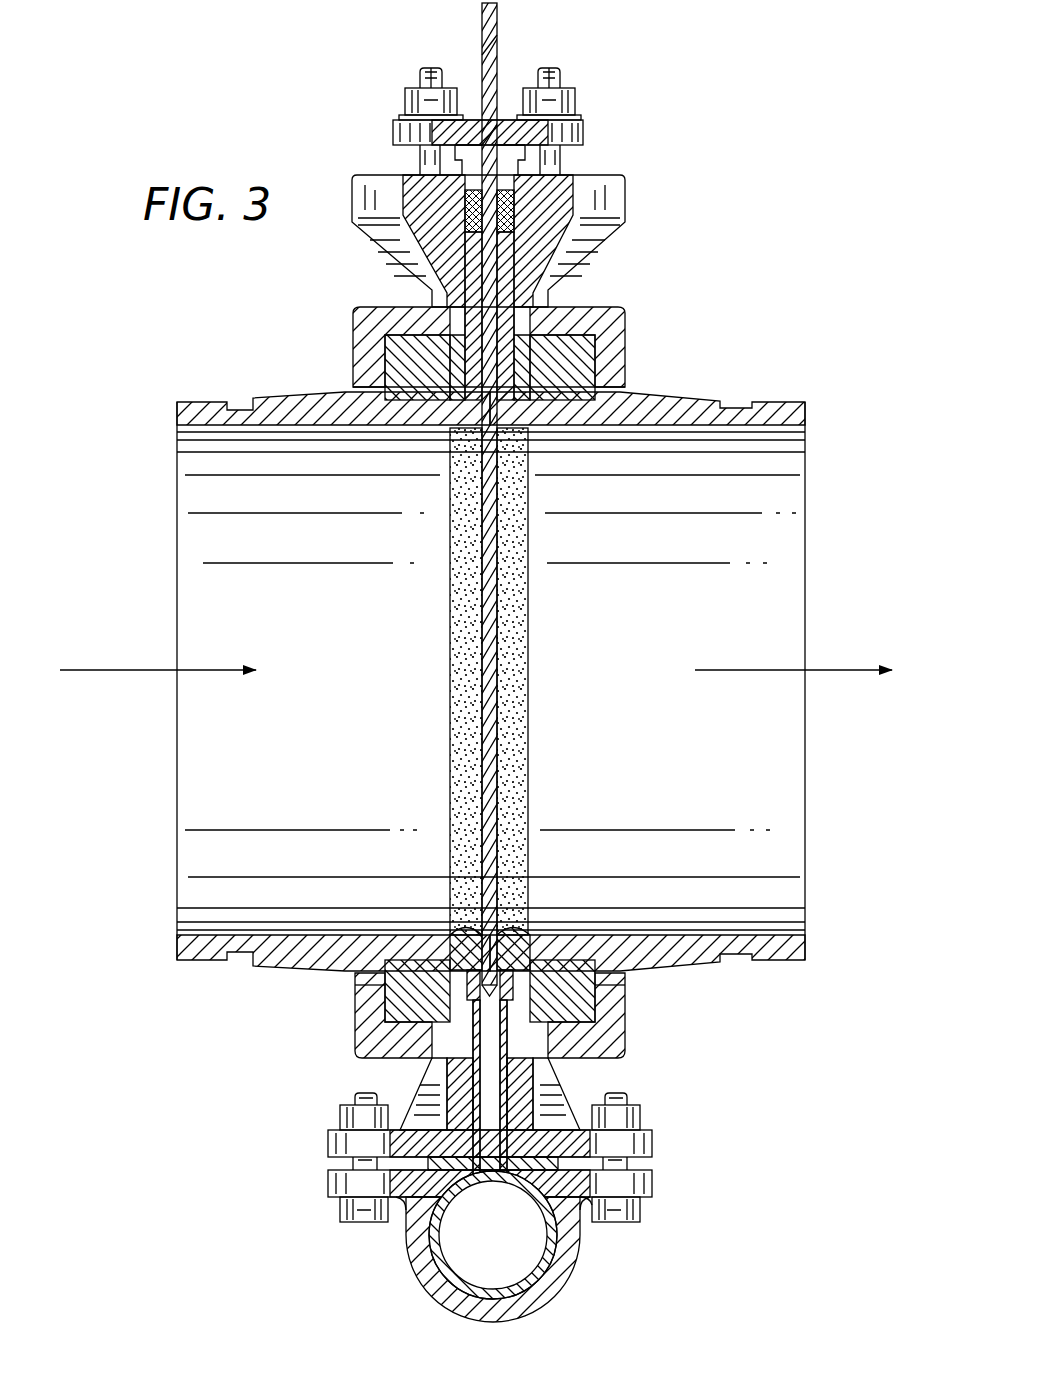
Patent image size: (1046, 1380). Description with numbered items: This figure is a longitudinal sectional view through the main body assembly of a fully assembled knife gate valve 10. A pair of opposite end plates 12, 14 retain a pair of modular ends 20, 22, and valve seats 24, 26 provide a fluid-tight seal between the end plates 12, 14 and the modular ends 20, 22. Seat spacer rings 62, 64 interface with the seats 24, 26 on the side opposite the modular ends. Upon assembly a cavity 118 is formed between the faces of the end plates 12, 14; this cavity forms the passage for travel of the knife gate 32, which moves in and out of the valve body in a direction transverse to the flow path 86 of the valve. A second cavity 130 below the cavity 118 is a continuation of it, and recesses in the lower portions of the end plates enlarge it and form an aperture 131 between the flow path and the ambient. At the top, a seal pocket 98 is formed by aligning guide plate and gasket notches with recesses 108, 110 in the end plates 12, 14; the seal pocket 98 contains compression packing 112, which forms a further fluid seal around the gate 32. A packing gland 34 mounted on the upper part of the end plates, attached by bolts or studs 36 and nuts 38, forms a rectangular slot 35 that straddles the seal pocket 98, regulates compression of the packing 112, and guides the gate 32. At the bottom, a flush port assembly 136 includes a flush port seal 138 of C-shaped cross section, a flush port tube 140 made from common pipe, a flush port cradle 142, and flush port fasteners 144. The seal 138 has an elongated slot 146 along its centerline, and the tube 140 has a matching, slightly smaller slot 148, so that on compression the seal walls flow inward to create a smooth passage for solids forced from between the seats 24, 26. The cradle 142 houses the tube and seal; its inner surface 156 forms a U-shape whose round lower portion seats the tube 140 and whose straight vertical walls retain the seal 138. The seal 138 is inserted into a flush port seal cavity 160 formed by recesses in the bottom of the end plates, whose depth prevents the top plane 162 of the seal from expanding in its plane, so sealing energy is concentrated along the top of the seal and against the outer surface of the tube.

The knife gate valve 10 is at (814, 262).
The end plate 12 is at (365, 1012).
The end plate 14 is at (615, 1012).
The modular end 20 is at (188, 962).
The modular end 22 is at (806, 963).
The valve seat 24 is at (448, 398).
The valve seat 26 is at (540, 392).
The knife gate 32 is at (520, 748).
The packing gland 34 is at (585, 135).
The rectangular slot 35 is at (556, 102).
The bolts or studs 36 is at (421, 70).
The nuts 38 is at (405, 102).
The seat spacer ring 62 is at (355, 318).
The seat spacer ring 64 is at (540, 343).
The flow path 86 is at (848, 672).
The seal pocket 98 is at (516, 212).
The recess 108 is at (468, 210).
The recess 110 is at (622, 192).
The compression packing 112 is at (400, 196).
The cavity 118 is at (512, 290).
The second cavity 130 is at (498, 1062).
The aperture 131 is at (505, 1138).
The flush port assembly 136 is at (712, 1190).
The flush port seal 138 is at (330, 1147).
The flush port tube 140 is at (535, 1250).
The flush port cradle 142 is at (410, 1248).
The flush port fasteners 144 is at (340, 1207).
The elongated slot 146 is at (655, 1143).
The slot 148 is at (565, 1200).
The inner surface 156 is at (430, 1268).
The flush port seal cavity 160 is at (405, 1103).
The top plane 162 is at (423, 1058).